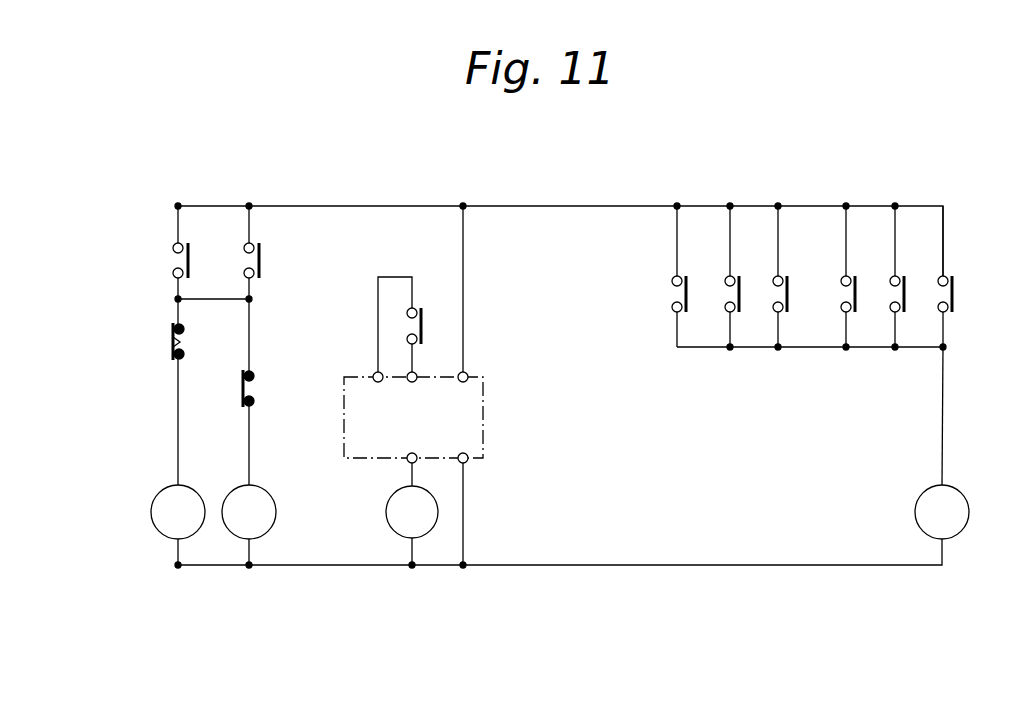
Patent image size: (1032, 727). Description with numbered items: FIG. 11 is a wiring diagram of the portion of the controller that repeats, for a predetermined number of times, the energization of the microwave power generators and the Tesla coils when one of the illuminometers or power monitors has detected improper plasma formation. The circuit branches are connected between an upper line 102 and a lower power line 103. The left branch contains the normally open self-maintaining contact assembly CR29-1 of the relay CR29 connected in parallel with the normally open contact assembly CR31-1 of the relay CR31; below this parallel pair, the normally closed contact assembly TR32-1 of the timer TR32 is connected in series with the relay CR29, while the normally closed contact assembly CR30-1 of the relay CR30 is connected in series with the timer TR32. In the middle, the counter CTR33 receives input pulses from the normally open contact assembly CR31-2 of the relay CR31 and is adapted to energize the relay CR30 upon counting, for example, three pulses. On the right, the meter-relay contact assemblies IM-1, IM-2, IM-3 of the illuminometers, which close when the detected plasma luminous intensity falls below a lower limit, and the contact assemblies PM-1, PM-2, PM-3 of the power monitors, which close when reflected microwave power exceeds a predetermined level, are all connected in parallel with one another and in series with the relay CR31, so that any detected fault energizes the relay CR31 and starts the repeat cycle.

The line 102 is at (178, 206).
The power line 103 is at (178, 565).
The normally open contact assembly CR31-1 is at (211, 252).
The normally open self-maintaining contact assembly CR29-1 is at (289, 252).
The normally closed contact assembly TR32-1 is at (206, 392).
The normally closed contact assembly CR30-1 is at (276, 392).
The normally open contact assembly CR31-2 is at (420, 324).
The counter CTR33 is at (483, 432).
The meter-relay contact assembly IM-1 is at (696, 276).
The meter-relay contact assembly IM-2 is at (748, 276).
The meter-relay contact assembly IM-3 is at (796, 276).
The meter-relay contact assembly PM-1 is at (867, 276).
The meter-relay contact assembly PM-2 is at (915, 276).
The meter-relay contact assembly PM-3 is at (964, 276).
The relay CR29 is at (178, 525).
The timer TR32 is at (249, 525).
The relay CR30 is at (412, 514).
The relay CR31 is at (942, 443).